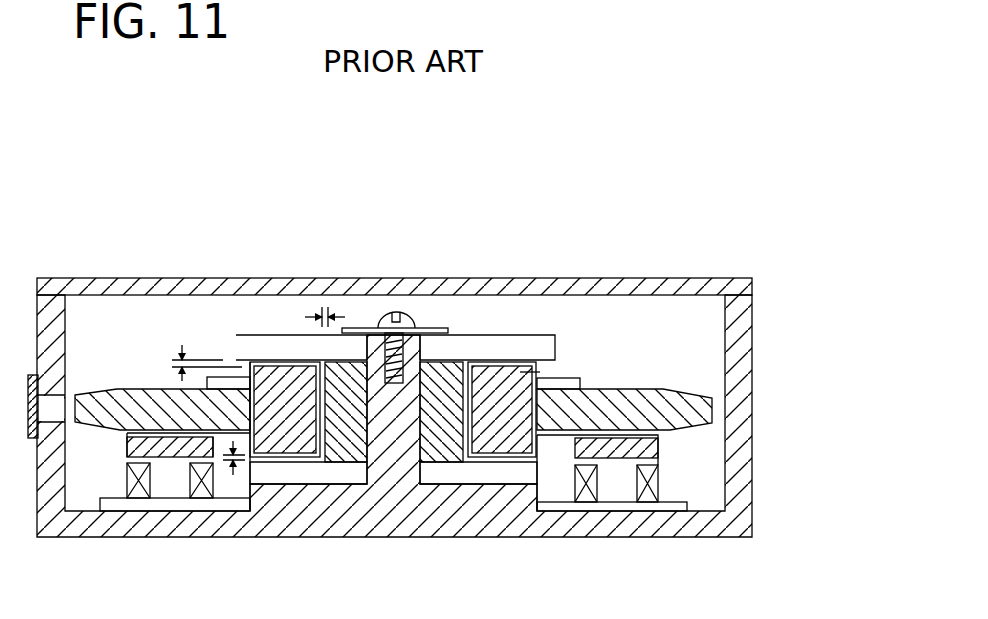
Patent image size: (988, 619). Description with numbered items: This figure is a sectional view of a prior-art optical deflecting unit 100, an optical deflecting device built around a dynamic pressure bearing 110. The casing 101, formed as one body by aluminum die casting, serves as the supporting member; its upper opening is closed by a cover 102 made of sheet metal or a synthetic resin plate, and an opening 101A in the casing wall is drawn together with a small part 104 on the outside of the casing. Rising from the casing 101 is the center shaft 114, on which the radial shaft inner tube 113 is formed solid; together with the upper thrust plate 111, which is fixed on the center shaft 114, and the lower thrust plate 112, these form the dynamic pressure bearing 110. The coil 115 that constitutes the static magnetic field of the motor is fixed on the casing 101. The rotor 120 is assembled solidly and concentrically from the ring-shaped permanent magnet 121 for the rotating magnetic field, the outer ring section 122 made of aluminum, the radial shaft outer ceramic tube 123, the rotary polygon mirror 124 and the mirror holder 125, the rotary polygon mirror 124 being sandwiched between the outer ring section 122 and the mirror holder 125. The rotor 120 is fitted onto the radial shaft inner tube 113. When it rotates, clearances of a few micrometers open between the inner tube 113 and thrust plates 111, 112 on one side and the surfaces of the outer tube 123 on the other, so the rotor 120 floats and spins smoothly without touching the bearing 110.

The optical deflecting unit 100 is at (600, 248).
The casing 101 is at (672, 533).
The hole 101A is at (53, 402).
The cover 102 is at (125, 279).
The plug 104 is at (33, 422).
The dynamic pressure bearing 110 is at (480, 222).
The upper thrust plate 111 is at (260, 340).
The lower thrust plate 112 is at (292, 473).
The radial shaft inner tube 113 is at (348, 358).
The center shaft 114 is at (408, 400).
The coil 115 is at (660, 480).
The rotor 120 is at (818, 255).
The ring-shaped magnet 121 is at (660, 450).
The outer ring section 122 is at (660, 440).
The radial shaft outer ceramic tube 123 is at (540, 372).
The rotary polygon mirror 124 is at (683, 393).
The mirror holder 125 is at (580, 380).